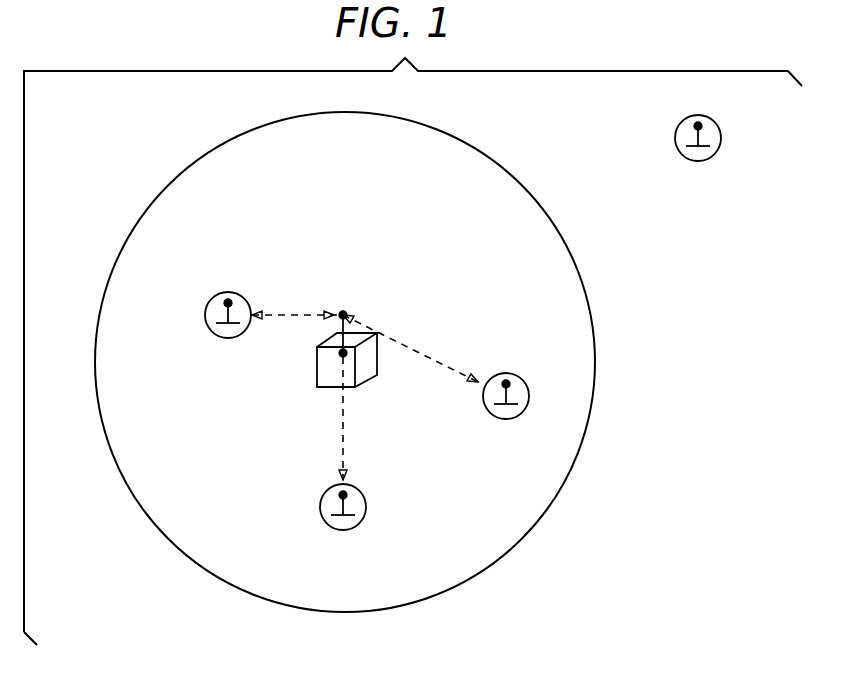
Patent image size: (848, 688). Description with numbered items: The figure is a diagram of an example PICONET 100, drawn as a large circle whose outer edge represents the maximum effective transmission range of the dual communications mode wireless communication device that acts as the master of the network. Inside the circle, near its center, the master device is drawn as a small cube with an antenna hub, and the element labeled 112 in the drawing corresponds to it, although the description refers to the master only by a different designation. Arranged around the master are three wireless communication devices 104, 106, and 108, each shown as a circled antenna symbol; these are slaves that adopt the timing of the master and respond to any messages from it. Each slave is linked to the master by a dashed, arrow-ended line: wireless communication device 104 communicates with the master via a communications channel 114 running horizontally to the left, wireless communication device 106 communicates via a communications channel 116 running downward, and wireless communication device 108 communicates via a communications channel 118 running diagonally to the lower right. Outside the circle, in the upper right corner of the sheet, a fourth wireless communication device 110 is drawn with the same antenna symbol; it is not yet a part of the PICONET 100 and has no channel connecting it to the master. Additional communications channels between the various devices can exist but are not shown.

The PICONET 100 is at (592, 412).
The wireless communication device 104 is at (226, 338).
The wireless communication device 106 is at (340, 530).
The wireless communication device 108 is at (503, 419).
The fourth wireless communication device 110 is at (696, 161).
The master device / access point 112 is at (325, 390).
The communications channel 114 is at (297, 306).
The communications channel 116 is at (348, 423).
The communications channel 118 is at (438, 362).